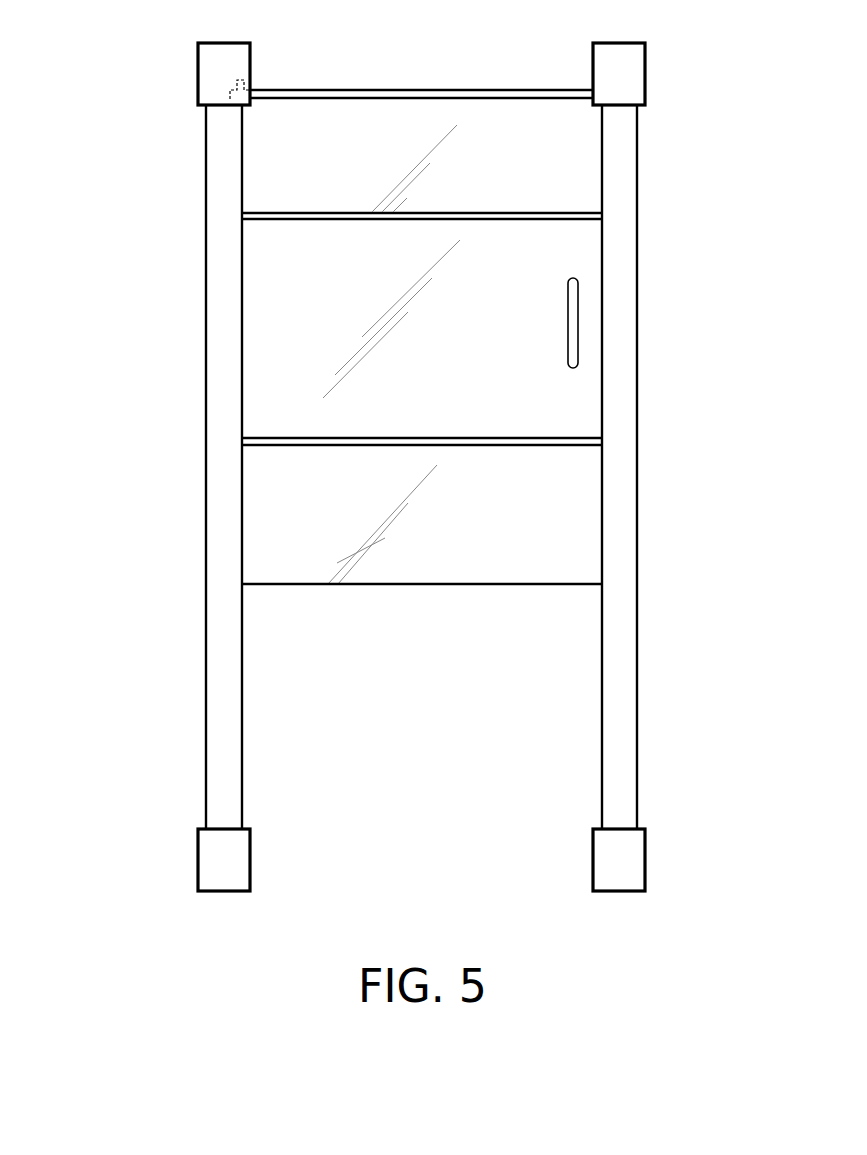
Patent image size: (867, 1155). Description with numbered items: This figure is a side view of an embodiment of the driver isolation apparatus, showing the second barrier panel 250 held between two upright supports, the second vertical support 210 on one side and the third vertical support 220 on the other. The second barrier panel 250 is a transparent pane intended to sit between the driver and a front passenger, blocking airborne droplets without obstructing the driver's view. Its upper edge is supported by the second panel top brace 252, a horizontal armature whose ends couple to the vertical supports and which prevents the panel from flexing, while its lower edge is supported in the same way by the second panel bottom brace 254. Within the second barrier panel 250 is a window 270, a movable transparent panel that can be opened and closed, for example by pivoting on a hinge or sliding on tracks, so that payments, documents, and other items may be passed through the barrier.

The second vertical support 210 is at (620, 162).
The third vertical support 220 is at (210, 163).
The second barrier panel 250 is at (330, 182).
The second panel top brace 252 is at (387, 93).
The second panel bottom brace 254 is at (422, 585).
The window 270 is at (540, 388).